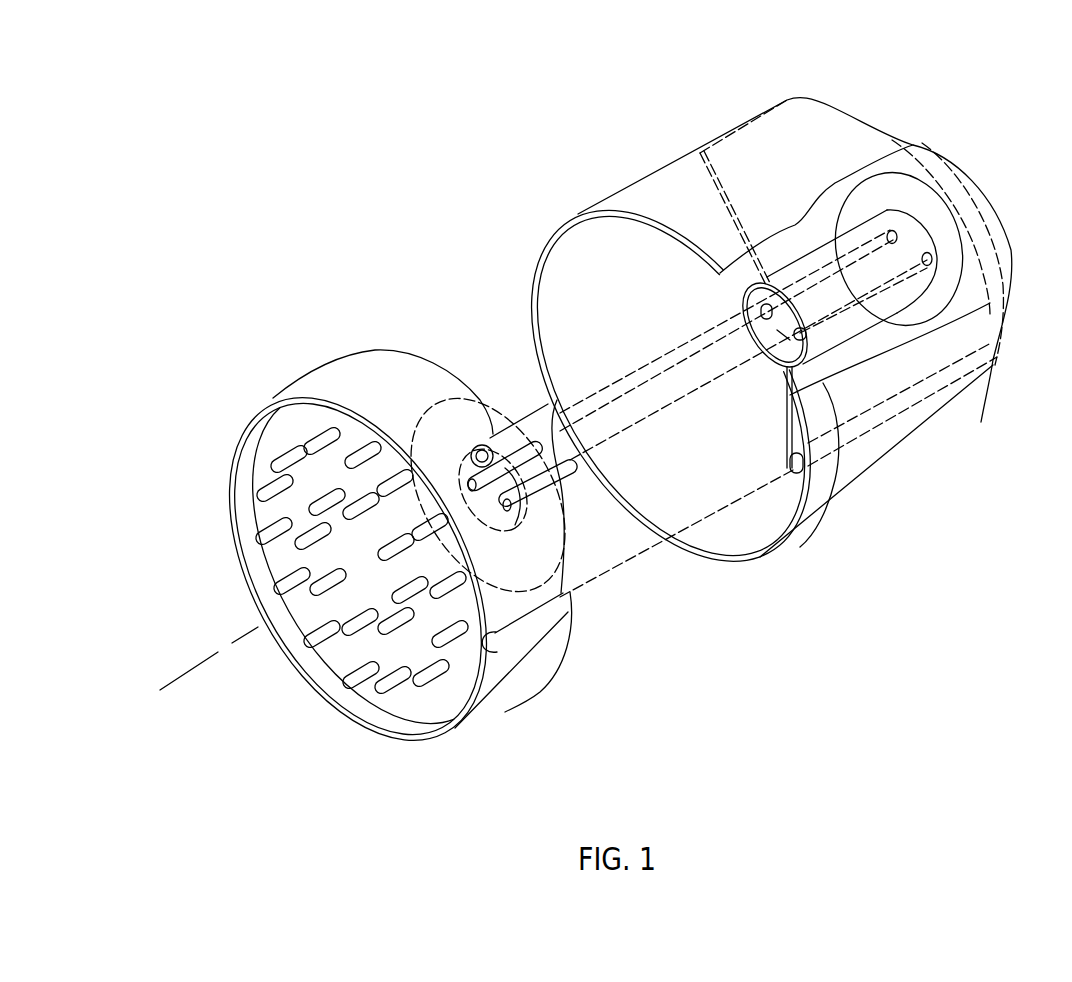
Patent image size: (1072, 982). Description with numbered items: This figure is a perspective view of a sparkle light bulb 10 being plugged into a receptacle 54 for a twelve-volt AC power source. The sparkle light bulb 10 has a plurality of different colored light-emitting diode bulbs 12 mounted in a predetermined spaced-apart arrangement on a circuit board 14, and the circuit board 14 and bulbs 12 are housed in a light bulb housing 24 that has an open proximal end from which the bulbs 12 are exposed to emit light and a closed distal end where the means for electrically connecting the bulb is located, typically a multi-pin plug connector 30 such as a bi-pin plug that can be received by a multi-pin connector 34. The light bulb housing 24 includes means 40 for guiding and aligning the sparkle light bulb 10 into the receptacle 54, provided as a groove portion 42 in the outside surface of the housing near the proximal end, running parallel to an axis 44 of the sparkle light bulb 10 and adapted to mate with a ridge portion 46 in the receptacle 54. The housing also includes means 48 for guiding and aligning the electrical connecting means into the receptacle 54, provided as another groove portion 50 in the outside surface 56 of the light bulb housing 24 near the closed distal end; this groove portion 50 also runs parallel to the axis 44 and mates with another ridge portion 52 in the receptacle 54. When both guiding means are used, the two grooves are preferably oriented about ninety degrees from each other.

The sparkle light bulb 10 is at (353, 334).
The light-emitting diode (LED) bulbs 12 is at (285, 455).
The circuit board 14 is at (280, 560).
The light bulb housing 24 is at (517, 677).
The multi-pin plug connector 30 is at (557, 400).
The multi-pin connector 34 is at (840, 510).
The means for guiding and aligning the sparkle light bulb 40 is at (514, 633).
The groove portion 42 is at (540, 613).
The axis 44 is at (226, 652).
The ridge portion 46 is at (793, 470).
The means for guiding and aligning the means for electrically connecting 48 is at (497, 438).
The groove portion 50 is at (540, 436).
The ridge portion 52 is at (773, 297).
The receptacle 54 is at (637, 167).
The outside surface 56 is at (333, 372).